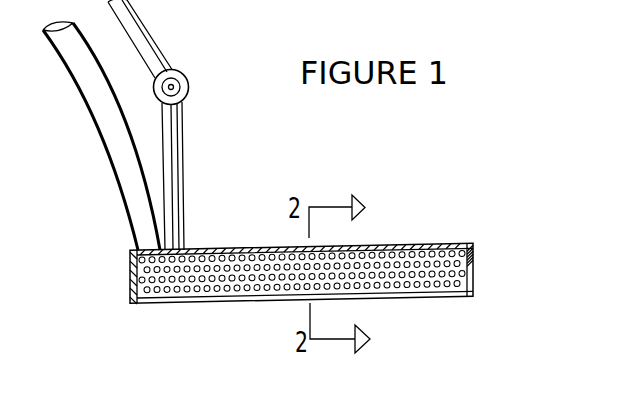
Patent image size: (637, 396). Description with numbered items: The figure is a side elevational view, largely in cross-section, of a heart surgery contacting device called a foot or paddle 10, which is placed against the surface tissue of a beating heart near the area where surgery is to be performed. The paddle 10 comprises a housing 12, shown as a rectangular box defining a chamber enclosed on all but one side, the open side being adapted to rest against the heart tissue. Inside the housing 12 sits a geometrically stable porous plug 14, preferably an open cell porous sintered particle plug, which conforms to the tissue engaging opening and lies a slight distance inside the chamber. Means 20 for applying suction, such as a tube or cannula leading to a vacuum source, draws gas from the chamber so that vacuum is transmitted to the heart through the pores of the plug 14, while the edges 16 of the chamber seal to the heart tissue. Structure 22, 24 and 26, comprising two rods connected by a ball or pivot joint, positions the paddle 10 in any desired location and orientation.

The paddle 10 is at (472, 243).
The housing 12 is at (473, 283).
The geometrically stable porous plug 14 is at (180, 297).
The edges 16 is at (474, 297).
The means for applying suction 20 is at (110, 148).
The positioning structure 22 is at (183, 162).
The ball or pivot joint 24 is at (189, 86).
The positioning structure 26 is at (158, 50).